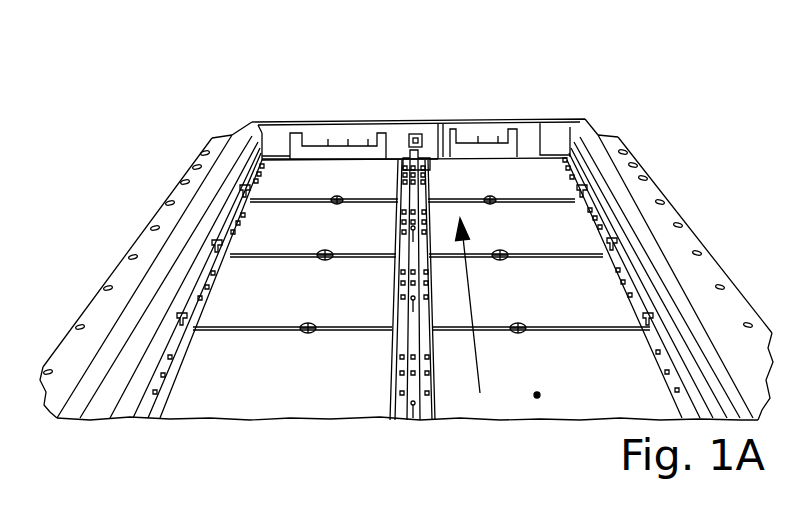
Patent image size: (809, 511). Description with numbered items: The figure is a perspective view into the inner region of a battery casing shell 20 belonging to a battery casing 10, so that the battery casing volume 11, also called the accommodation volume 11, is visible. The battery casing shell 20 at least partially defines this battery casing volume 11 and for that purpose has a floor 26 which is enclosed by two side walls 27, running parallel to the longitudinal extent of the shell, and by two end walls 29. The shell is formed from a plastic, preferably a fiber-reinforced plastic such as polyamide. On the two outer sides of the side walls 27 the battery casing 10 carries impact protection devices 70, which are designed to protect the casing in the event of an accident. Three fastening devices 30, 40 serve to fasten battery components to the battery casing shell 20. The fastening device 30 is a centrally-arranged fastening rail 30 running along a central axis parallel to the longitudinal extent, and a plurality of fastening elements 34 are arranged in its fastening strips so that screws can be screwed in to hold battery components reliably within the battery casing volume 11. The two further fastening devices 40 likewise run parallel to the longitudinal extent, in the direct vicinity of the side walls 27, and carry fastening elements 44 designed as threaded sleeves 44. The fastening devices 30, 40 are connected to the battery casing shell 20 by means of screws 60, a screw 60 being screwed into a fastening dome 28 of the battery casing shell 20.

The battery casing 10 is at (660, 136).
The battery casing volume 11 is at (540, 398).
The battery casing shell 20 is at (347, 106).
The floor 26 is at (527, 188).
The side wall 27 is at (225, 190).
The fastening dome 28 is at (268, 188).
The end wall 29 is at (393, 138).
The fastening device 30 is at (433, 167).
The fastening element 34 is at (398, 393).
The fastening device 40 is at (215, 140).
The fastening element 44 is at (590, 212).
The screw 60 is at (218, 238).
The impact protection device 70 is at (68, 345).